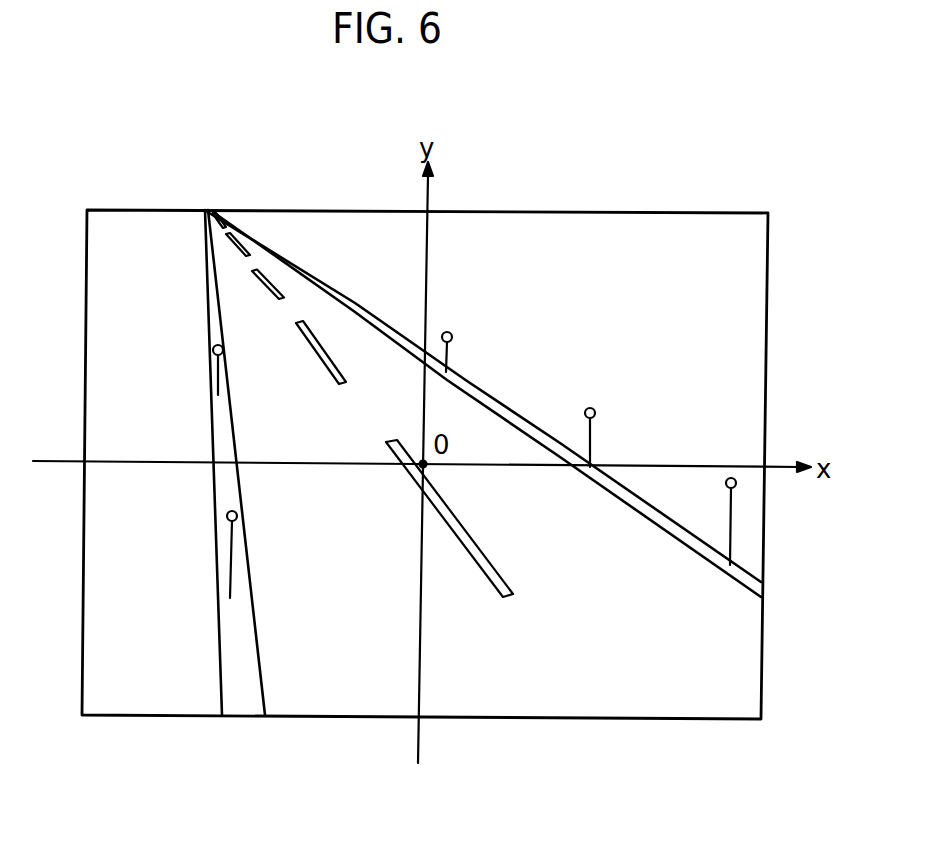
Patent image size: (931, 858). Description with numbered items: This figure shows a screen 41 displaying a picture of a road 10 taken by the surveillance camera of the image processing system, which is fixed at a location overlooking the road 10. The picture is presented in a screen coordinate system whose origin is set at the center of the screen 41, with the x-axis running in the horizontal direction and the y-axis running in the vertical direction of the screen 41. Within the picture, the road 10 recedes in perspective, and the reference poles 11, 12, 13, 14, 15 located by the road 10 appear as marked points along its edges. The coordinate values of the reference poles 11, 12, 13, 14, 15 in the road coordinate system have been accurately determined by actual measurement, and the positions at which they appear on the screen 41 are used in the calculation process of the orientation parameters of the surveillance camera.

The road 10 is at (348, 318).
The reference pole 11 is at (228, 557).
The reference pole 12 is at (217, 367).
The reference pole 13 is at (728, 513).
The reference pole 14 is at (591, 435).
The reference pole 15 is at (449, 350).
The screen 41 is at (768, 280).